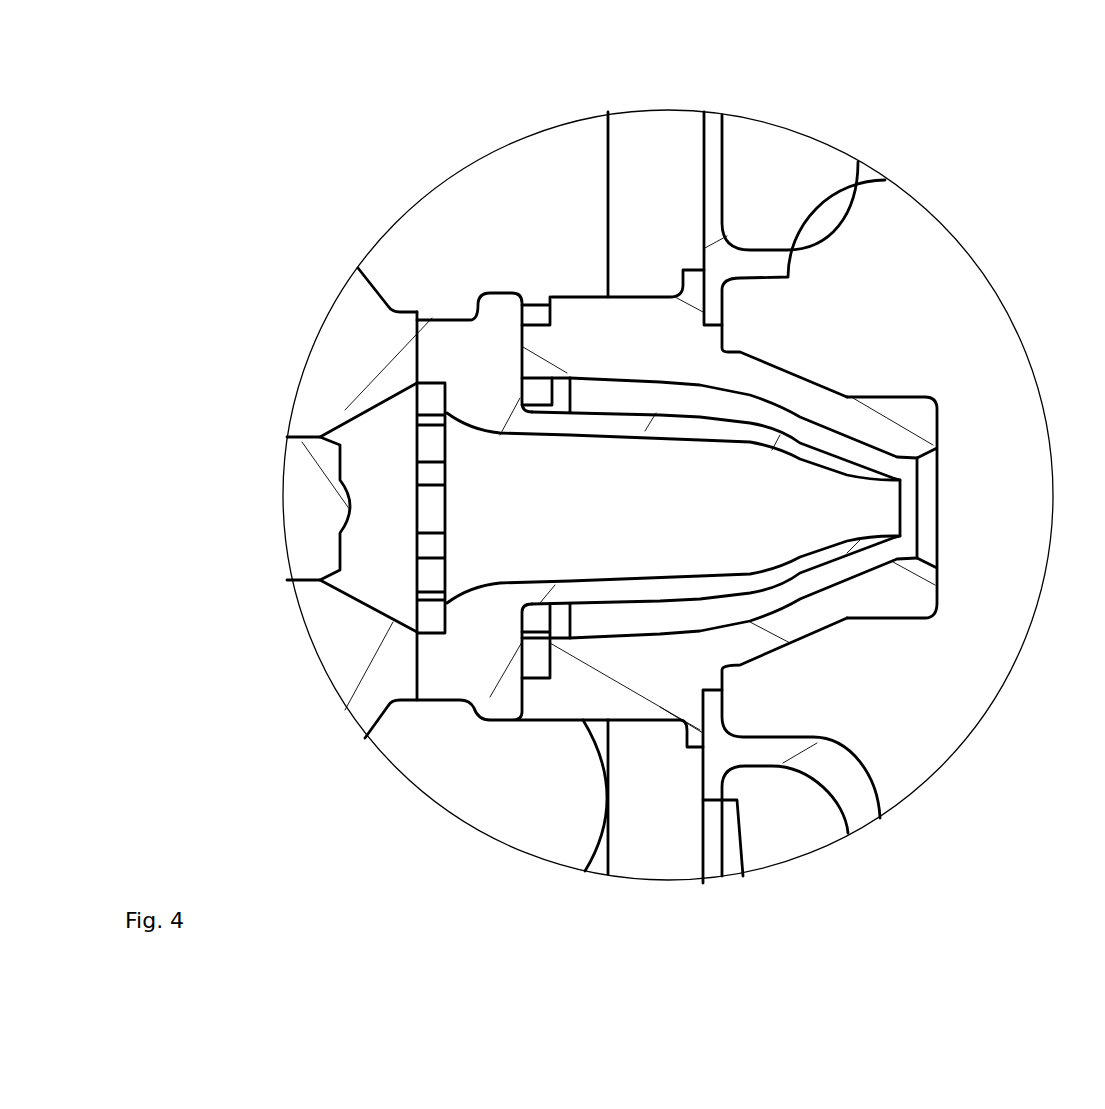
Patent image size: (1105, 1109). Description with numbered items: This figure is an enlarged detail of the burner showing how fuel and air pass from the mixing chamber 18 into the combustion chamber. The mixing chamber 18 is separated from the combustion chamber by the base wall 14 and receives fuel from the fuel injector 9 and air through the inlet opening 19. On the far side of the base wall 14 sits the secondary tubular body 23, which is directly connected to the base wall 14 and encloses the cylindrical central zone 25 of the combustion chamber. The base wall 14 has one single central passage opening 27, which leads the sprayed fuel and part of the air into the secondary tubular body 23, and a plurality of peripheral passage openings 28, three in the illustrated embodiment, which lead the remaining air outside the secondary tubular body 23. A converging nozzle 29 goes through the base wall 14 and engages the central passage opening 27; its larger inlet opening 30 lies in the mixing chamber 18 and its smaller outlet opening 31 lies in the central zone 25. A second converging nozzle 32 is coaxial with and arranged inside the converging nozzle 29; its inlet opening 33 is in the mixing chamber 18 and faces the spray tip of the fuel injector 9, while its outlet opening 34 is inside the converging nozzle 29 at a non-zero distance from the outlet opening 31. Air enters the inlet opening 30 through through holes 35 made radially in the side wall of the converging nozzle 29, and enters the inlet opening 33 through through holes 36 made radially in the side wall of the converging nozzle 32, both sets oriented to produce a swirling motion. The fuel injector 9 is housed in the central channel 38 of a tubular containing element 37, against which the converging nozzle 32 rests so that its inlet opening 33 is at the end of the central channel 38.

The fuel injector 9 is at (308, 512).
The base wall 14 is at (715, 143).
The mixing chamber 18 is at (503, 205).
The inlet opening 19 is at (472, 772).
The secondary tubular body 23 is at (912, 240).
The central zone 25 is at (950, 692).
The central passage opening 27 is at (637, 306).
The peripheral passage openings 28 is at (706, 861).
The converging nozzle 29 is at (815, 612).
The inlet opening 30 is at (562, 388).
The outlet opening 31 is at (944, 504).
The converging nozzle 32 is at (803, 455).
The inlet opening 33 is at (404, 437).
The outlet opening 34 is at (907, 521).
The through holes 35 is at (537, 620).
The through holes 36 is at (431, 618).
The containing element 37 is at (363, 338).
The central channel 38 is at (386, 578).